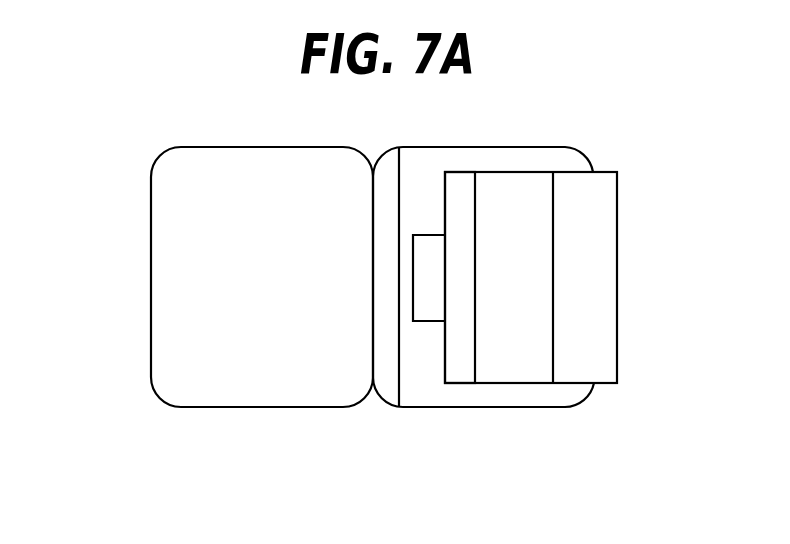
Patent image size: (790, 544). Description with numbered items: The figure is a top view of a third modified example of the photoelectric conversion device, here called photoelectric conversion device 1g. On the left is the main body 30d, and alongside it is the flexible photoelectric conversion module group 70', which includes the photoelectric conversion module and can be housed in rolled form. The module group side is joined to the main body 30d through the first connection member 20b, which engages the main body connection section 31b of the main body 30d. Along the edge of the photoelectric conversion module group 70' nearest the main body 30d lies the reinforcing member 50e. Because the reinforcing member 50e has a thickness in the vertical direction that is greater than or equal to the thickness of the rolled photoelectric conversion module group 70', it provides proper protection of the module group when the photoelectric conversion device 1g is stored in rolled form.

The photoelectric conversion device 1g is at (124, 226).
The main body 30d is at (183, 297).
The first connection member 20b is at (430, 288).
The main body connection section 31b is at (402, 258).
The flexible photoelectric conversion module group 70' is at (568, 277).
The reinforcing member 50e is at (457, 377).